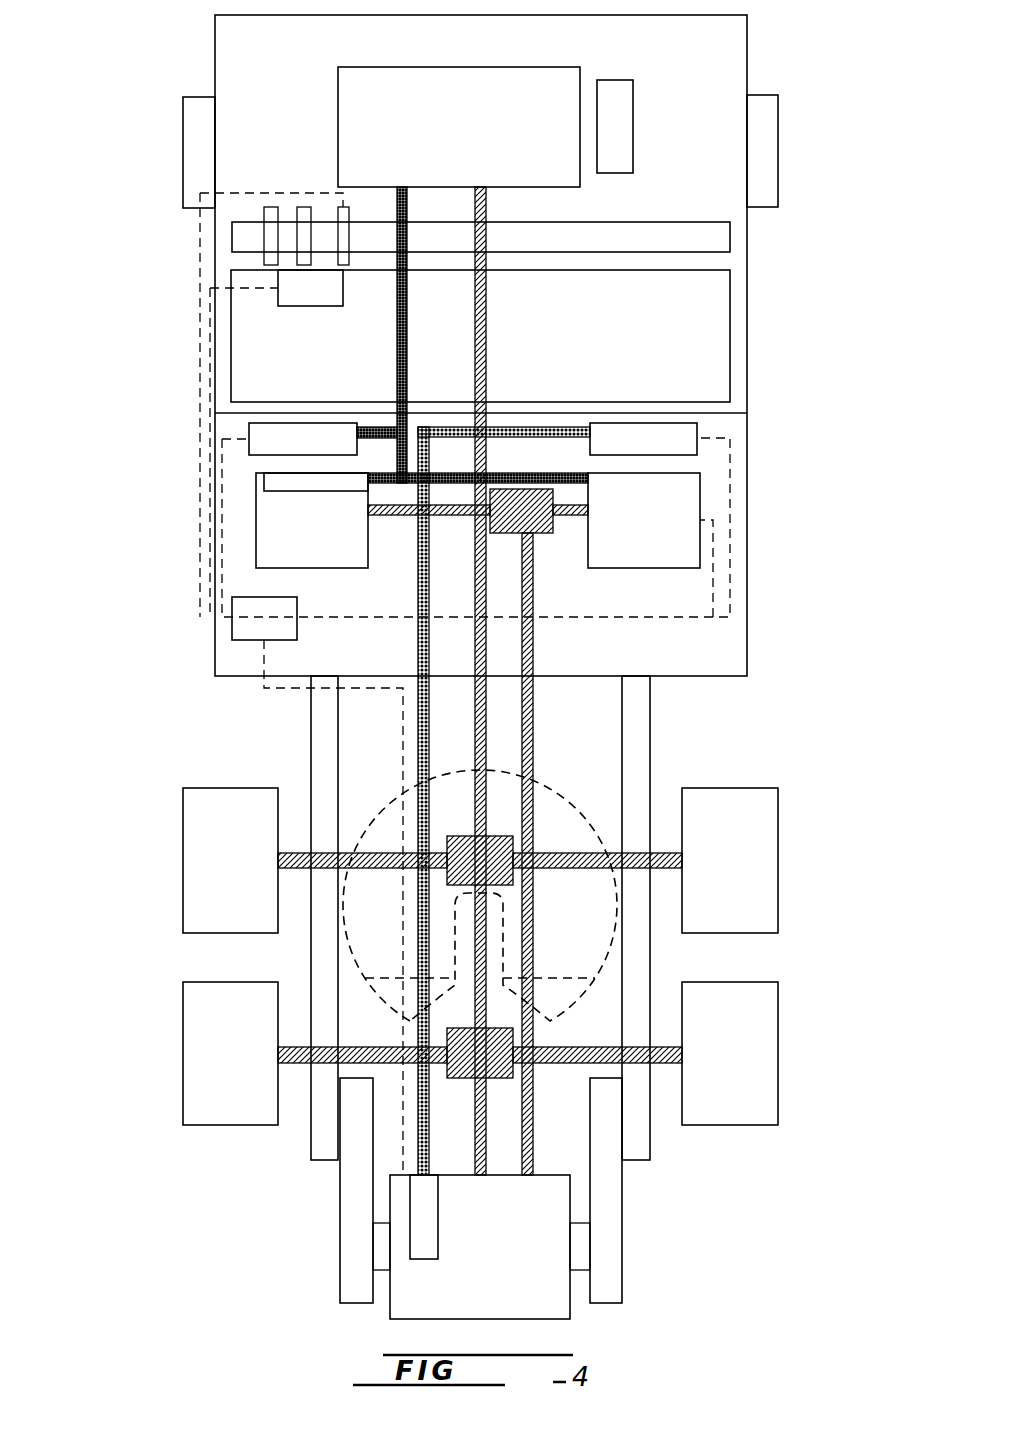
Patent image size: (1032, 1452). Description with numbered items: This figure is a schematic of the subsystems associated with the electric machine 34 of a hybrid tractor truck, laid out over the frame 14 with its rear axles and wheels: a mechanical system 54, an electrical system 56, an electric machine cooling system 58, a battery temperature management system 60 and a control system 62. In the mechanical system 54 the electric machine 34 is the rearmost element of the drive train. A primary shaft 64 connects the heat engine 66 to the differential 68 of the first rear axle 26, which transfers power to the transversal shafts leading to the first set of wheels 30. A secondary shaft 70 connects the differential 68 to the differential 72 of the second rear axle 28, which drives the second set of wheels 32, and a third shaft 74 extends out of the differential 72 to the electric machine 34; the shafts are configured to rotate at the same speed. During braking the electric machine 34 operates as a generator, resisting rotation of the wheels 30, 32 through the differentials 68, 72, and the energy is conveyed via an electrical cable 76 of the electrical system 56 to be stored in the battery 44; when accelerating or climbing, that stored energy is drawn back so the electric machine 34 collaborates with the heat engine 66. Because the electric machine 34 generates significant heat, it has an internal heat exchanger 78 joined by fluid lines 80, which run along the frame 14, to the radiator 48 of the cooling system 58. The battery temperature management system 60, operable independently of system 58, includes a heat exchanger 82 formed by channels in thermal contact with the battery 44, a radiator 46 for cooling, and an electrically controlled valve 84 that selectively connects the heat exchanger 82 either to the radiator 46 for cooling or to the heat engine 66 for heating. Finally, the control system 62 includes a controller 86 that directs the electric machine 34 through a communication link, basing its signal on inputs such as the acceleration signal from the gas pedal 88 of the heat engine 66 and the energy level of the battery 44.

The frame 14 is at (635, 688).
The first rear axle 26 is at (298, 862).
The second rear axle 28 is at (295, 1065).
The first set of rear wheels 30 is at (210, 880).
The second set of rear wheels 32 is at (195, 1050).
The electric machine 34 is at (540, 1260).
The battery 44 is at (688, 497).
The radiator 46 is at (265, 440).
The radiator 48 is at (688, 430).
The mechanical system 54 is at (480, 300).
The electrical system 56 is at (532, 683).
The electric machine cooling system 58 is at (540, 428).
The battery temperature management system 60 is at (453, 478).
The control system 62 is at (732, 557).
The primary shaft 64 is at (480, 720).
The heat engine 66 is at (546, 126).
The differential of the first rear axle 68 is at (510, 842).
The secondary shaft 70 is at (478, 937).
The differential of the second rear axle 72 is at (512, 1035).
The third shaft 74 is at (480, 1128).
The electrical cable 76 is at (528, 768).
The internal heat exchanger 78 is at (420, 1237).
The fluid lines 80 is at (418, 585).
The heat exchanger 82 is at (275, 483).
The electrically controlled valve 84 is at (385, 430).
The controller 86 is at (255, 623).
The gas pedal 88 is at (345, 226).